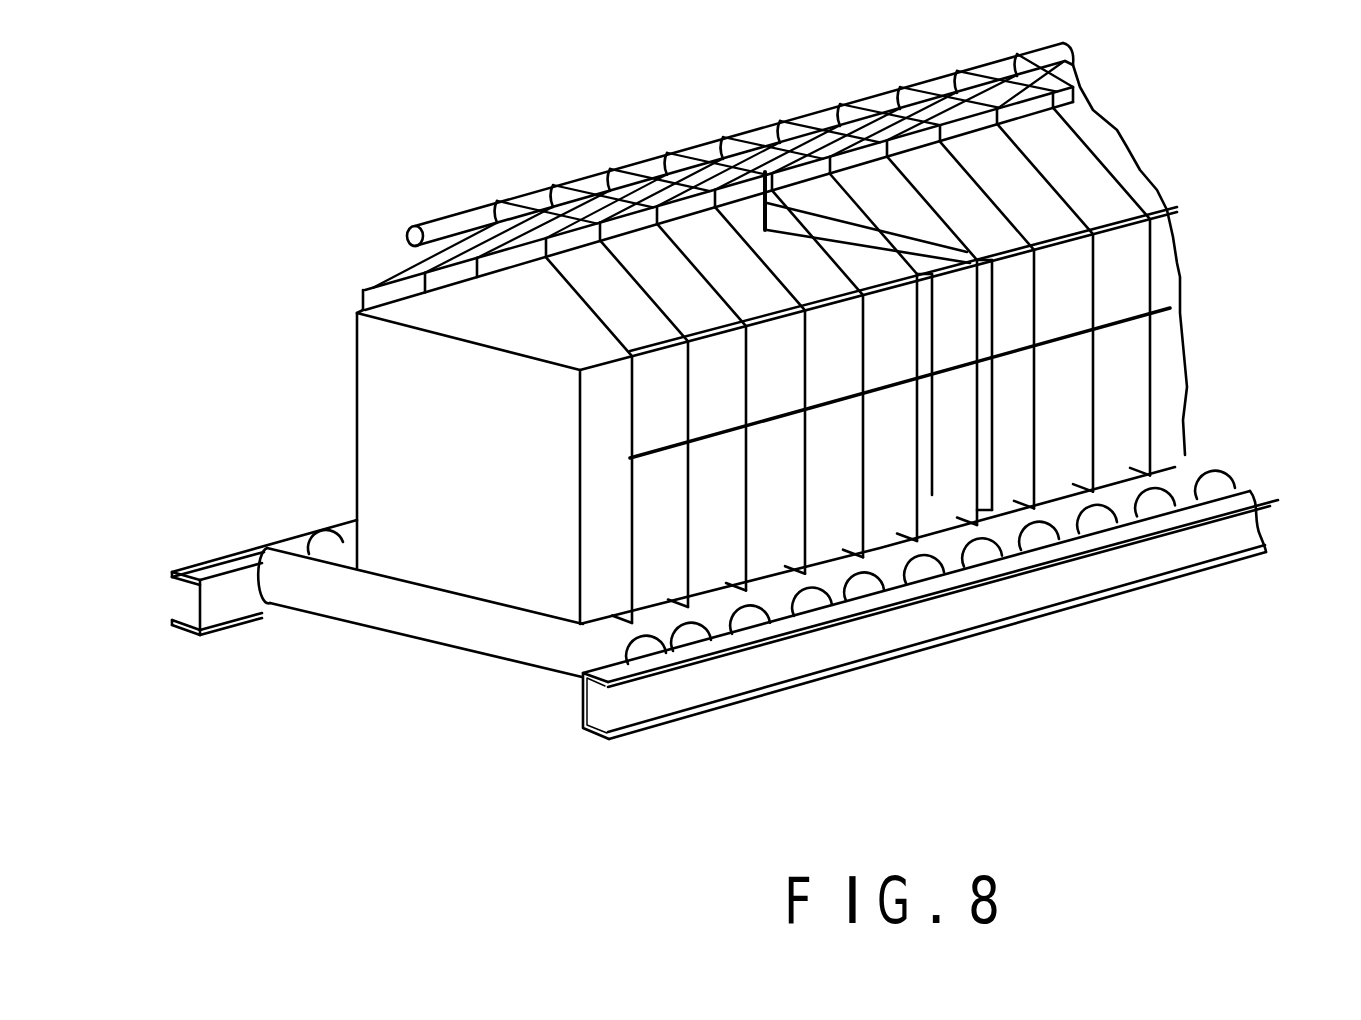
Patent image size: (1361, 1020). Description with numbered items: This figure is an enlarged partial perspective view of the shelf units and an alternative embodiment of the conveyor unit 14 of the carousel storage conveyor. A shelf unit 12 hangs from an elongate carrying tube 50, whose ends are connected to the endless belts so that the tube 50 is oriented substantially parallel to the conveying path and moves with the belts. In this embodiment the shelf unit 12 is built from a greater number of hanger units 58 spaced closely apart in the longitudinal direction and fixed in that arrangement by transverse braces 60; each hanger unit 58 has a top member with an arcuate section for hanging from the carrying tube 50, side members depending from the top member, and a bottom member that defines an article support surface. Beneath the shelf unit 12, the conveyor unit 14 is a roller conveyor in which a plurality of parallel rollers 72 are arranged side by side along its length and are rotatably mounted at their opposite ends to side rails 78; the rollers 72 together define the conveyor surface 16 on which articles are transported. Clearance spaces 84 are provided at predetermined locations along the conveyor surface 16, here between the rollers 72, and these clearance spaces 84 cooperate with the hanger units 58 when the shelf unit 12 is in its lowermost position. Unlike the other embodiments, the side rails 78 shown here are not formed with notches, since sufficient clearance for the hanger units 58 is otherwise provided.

The shelf unit 12 is at (378, 282).
The conveyor unit 14 is at (574, 707).
The conveyor surface 16 is at (288, 534).
The carrying tube 50 is at (437, 226).
The hanger unit 58 is at (1153, 251).
The transverse brace 60 is at (1125, 334).
The roller 72 is at (320, 603).
The side rail 78 is at (200, 567).
The clearance space 84 is at (675, 627).